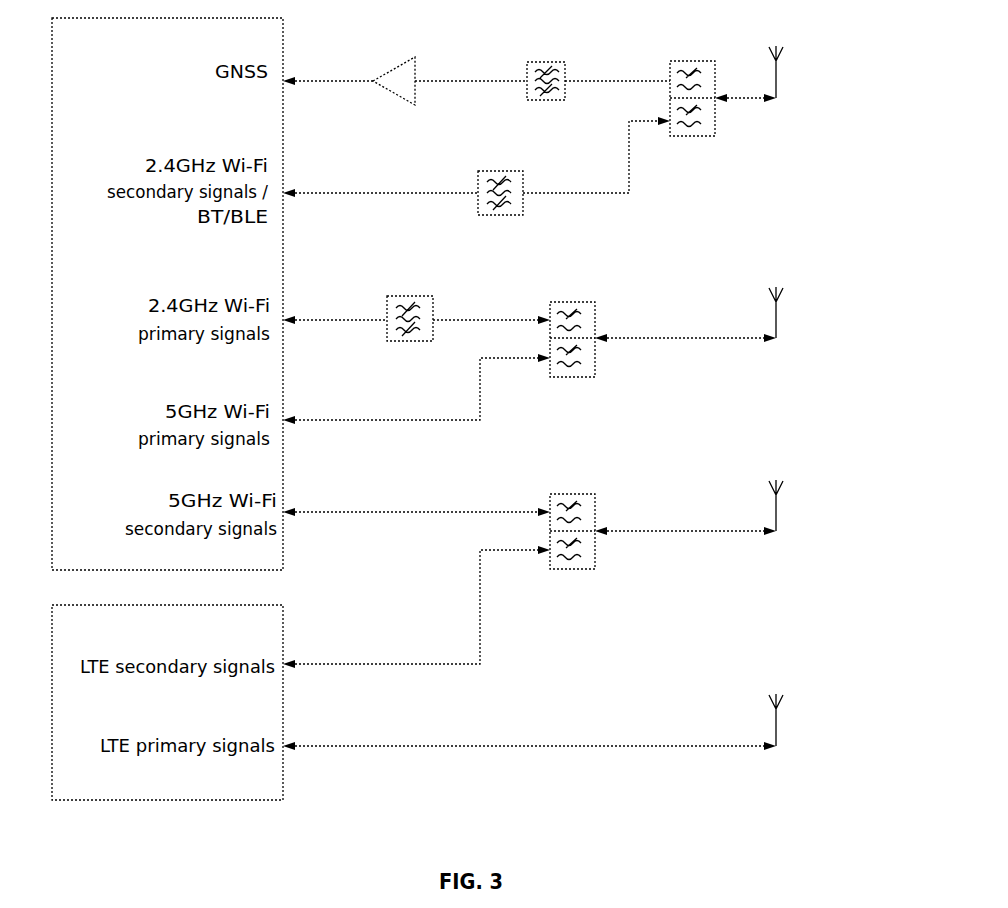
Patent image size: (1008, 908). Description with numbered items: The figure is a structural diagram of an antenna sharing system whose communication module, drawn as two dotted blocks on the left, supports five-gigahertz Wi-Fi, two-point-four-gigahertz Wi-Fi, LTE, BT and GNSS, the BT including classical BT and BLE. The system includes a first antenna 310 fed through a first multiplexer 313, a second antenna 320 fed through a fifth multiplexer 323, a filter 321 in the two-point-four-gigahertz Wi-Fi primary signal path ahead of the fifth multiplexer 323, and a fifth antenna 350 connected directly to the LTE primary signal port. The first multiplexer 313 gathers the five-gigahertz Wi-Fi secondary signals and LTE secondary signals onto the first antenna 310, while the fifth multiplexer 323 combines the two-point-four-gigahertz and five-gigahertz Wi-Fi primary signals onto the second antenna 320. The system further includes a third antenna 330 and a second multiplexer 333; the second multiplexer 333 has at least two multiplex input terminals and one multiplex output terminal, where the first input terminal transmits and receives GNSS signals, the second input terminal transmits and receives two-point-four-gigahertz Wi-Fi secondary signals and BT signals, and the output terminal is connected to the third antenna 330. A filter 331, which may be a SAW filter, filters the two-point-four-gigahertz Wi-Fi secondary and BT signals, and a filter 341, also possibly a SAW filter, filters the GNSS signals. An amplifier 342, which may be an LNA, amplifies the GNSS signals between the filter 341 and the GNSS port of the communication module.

The first antenna 310 is at (780, 509).
The first multiplexer 313 is at (575, 493).
The second antenna 320 is at (780, 318).
The filter 321 is at (411, 295).
The fifth multiplexer 323 is at (575, 301).
The third antenna 330 is at (778, 78).
The filter 331 is at (506, 170).
The second multiplexer 333 is at (697, 58).
The filter 341 is at (543, 60).
The amplifier 342 is at (390, 69).
The fifth antenna 350 is at (780, 732).